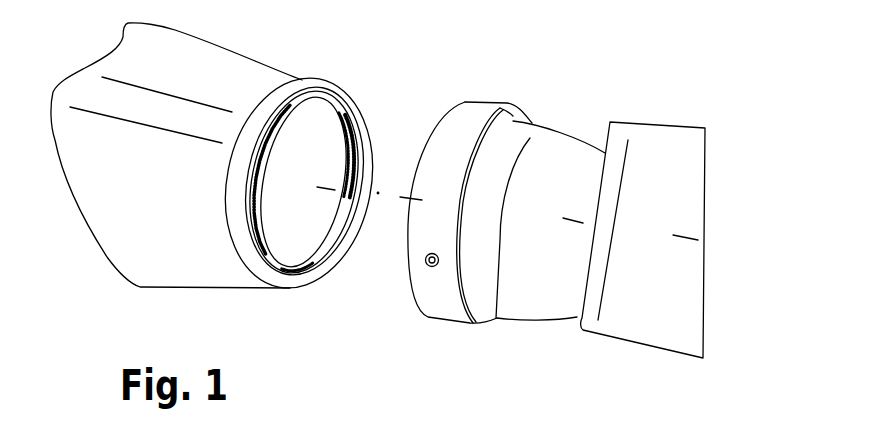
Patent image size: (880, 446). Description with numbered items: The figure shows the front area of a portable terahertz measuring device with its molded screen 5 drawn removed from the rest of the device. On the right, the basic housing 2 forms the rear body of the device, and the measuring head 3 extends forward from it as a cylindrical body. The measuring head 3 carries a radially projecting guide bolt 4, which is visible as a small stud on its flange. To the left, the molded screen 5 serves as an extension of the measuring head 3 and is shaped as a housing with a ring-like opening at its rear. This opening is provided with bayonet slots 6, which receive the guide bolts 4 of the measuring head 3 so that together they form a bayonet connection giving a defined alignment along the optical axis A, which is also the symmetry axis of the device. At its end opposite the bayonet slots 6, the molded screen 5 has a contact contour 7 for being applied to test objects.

The basic housing 2 is at (683, 338).
The measuring head 3 is at (542, 312).
The guide bolt 4 is at (429, 267).
The molded screen 5 is at (222, 272).
The bayonet slot 6 is at (368, 128).
The contact contour 7 is at (107, 257).
The optical axis A is at (777, 247).